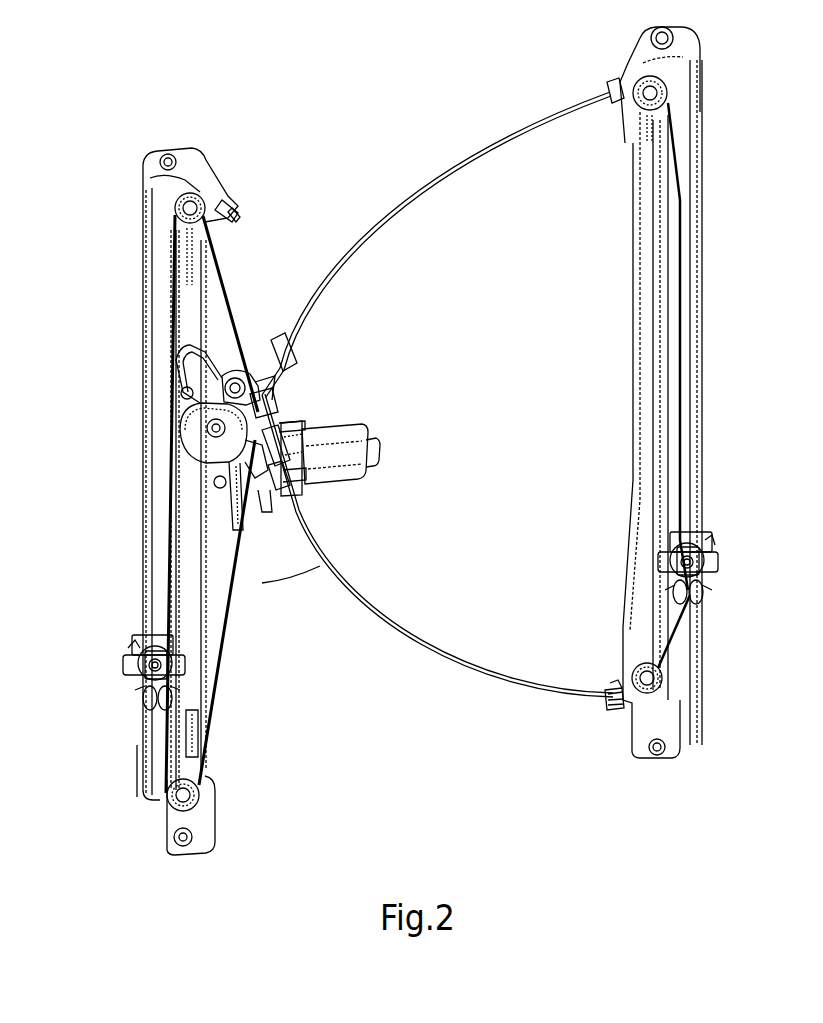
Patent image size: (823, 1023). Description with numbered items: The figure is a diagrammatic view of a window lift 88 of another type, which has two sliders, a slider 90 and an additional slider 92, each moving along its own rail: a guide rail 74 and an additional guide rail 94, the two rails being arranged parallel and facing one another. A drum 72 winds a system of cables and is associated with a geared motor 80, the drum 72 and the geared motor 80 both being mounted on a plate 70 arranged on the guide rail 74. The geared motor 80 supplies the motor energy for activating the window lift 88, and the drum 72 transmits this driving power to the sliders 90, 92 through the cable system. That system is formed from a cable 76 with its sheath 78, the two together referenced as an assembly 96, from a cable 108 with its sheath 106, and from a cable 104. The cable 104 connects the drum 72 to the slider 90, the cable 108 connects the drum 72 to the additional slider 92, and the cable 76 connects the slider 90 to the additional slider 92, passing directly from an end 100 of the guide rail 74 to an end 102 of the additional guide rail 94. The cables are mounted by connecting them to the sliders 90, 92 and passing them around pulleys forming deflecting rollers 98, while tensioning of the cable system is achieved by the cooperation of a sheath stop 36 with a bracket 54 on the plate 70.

The end of the guide rail 100 is at (202, 108).
The window lift 88 is at (385, 82).
The deflecting rollers 98 is at (214, 190).
The guide rail 74 is at (156, 242).
The cable 76 is at (166, 300).
The drum 72 is at (231, 372).
The plate 70 is at (290, 356).
The sheath stop 36 is at (288, 396).
The bracket 54 is at (300, 420).
The geared motor 80 is at (345, 440).
The sheath 106 is at (380, 216).
The cable 108 is at (681, 346).
The additional guide rail 94 is at (655, 262).
The additional slider 92 is at (695, 532).
The slider 90 is at (145, 640).
The assembly of cable and sheath 96 is at (72, 460).
The sheath 78 is at (262, 583).
The cable 104 is at (215, 700).
The end of the additional guide rail 102 is at (688, 795).